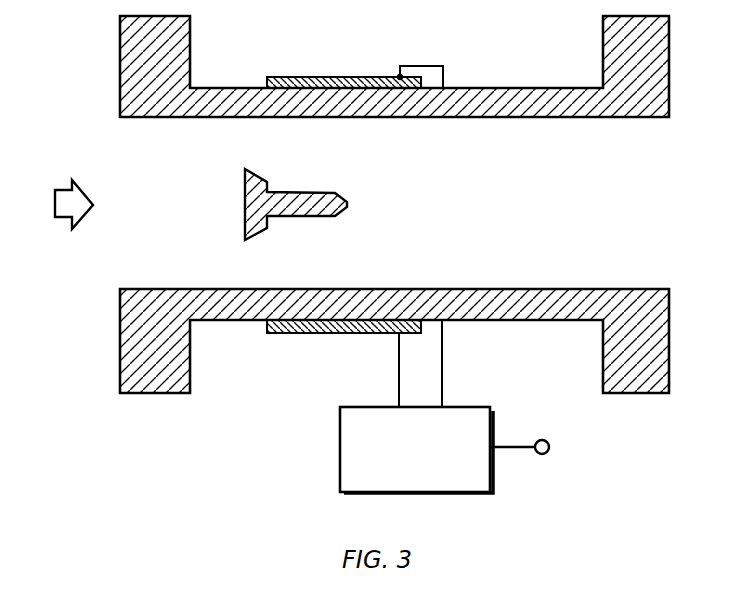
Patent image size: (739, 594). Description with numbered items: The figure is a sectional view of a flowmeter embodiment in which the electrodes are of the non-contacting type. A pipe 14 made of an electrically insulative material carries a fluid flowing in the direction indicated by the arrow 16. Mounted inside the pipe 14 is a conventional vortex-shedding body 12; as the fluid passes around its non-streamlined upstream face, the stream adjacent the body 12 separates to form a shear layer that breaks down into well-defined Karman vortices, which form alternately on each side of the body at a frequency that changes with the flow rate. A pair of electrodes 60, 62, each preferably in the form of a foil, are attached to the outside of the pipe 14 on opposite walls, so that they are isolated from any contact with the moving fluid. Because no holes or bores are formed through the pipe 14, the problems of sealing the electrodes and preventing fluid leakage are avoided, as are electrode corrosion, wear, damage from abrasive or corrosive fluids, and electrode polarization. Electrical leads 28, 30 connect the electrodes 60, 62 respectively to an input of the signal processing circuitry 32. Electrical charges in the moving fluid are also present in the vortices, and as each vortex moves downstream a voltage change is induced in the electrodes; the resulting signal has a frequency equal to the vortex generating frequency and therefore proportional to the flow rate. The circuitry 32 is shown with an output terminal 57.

The insulating pipe 14 is at (669, 46).
The arrow 16 is at (71, 194).
The vortex-shedding body 12 is at (305, 192).
The electrode 60 is at (305, 77).
The electrode 62 is at (293, 333).
The electrical lead 28 is at (399, 362).
The electrical lead 30 is at (442, 374).
The signal processing circuitry 32 is at (340, 462).
The output terminal 57 is at (548, 453).